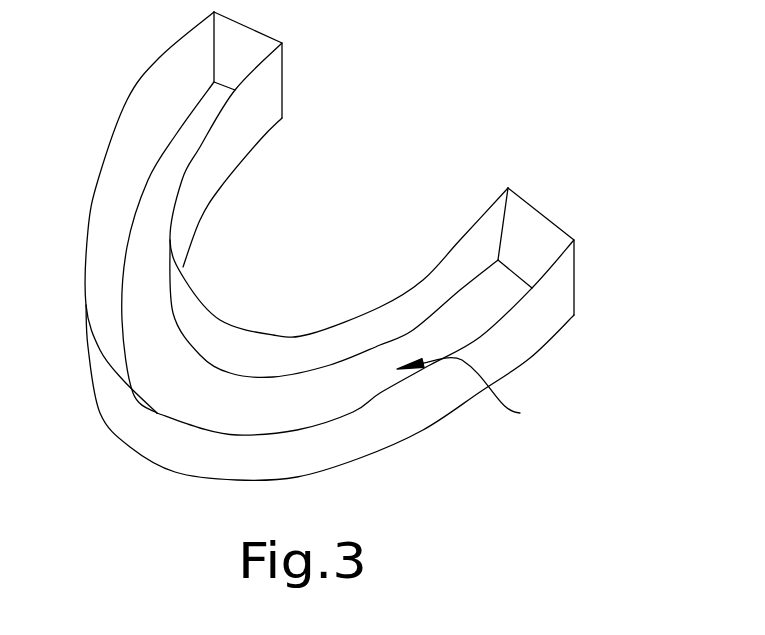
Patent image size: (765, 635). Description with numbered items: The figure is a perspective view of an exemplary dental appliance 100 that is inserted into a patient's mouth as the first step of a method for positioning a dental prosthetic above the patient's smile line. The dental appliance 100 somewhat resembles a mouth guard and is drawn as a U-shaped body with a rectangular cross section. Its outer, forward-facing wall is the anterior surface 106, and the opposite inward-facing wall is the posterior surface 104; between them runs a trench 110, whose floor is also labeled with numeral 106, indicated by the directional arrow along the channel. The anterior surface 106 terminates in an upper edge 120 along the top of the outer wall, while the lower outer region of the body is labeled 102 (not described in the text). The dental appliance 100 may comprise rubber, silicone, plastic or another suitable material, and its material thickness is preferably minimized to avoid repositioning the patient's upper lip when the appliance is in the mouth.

The dental appliance 100 is at (365, 271).
The outer side surface 102 is at (200, 465).
The posterior surface 104 is at (235, 135).
The anterior surface 106 is at (167, 394).
The trench 110 is at (487, 394).
The upper edge 120 is at (306, 421).